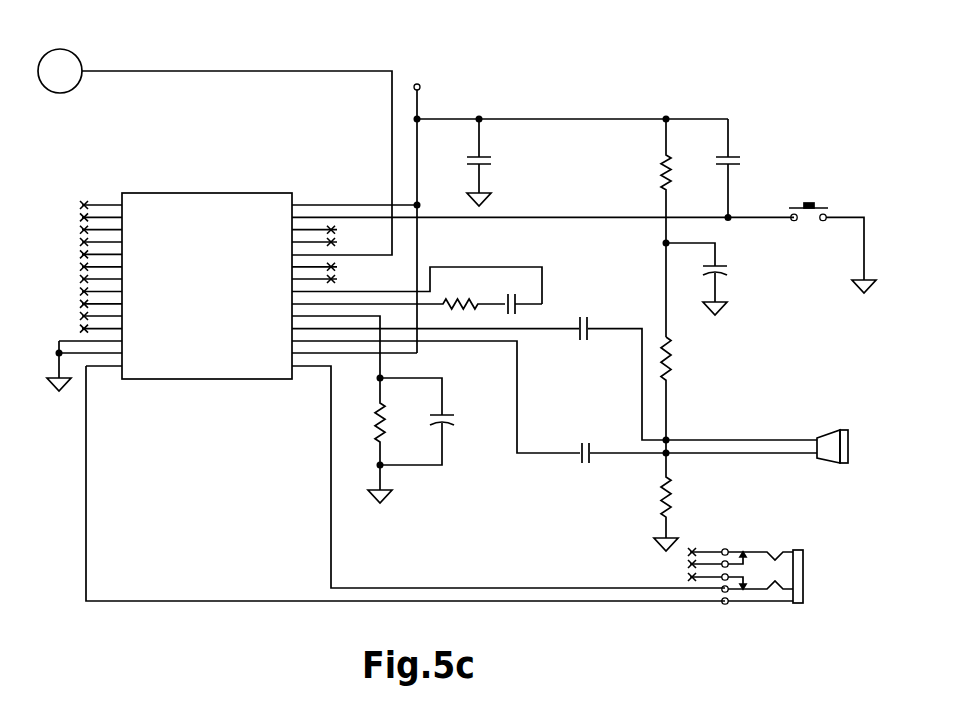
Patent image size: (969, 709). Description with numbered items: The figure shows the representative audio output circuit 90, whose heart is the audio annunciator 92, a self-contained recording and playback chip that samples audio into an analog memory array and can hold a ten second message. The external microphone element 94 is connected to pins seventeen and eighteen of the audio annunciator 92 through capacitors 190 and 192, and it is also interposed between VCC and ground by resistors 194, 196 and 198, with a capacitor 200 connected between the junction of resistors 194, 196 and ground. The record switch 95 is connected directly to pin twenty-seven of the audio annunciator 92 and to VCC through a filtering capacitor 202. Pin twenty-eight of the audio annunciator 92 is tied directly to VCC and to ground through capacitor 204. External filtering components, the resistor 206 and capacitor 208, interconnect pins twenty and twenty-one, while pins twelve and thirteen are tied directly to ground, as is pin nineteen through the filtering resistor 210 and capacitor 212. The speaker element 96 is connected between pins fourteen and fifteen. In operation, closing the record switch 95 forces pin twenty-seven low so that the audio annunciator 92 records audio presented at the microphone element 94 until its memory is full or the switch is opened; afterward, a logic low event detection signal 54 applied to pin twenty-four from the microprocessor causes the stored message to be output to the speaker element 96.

The event detection signal 54 is at (139, 71).
The audio output circuit 90 is at (545, 88).
The audio annunciator 92 is at (190, 192).
The external microphone element 94 is at (833, 436).
The record switch 95 is at (815, 205).
The speaker element 96 is at (805, 572).
The capacitor 190 is at (599, 433).
The capacitor 192 is at (590, 320).
The resistor 194 is at (660, 169).
The resistor 196 is at (672, 356).
The resistor 198 is at (672, 497).
The capacitor 200 is at (725, 262).
The filtering capacitor 202 is at (735, 156).
The capacitor 204 is at (480, 157).
The resistor 206 is at (462, 302).
The capacitor 208 is at (516, 292).
The resistor 210 is at (380, 418).
The capacitor 212 is at (450, 422).